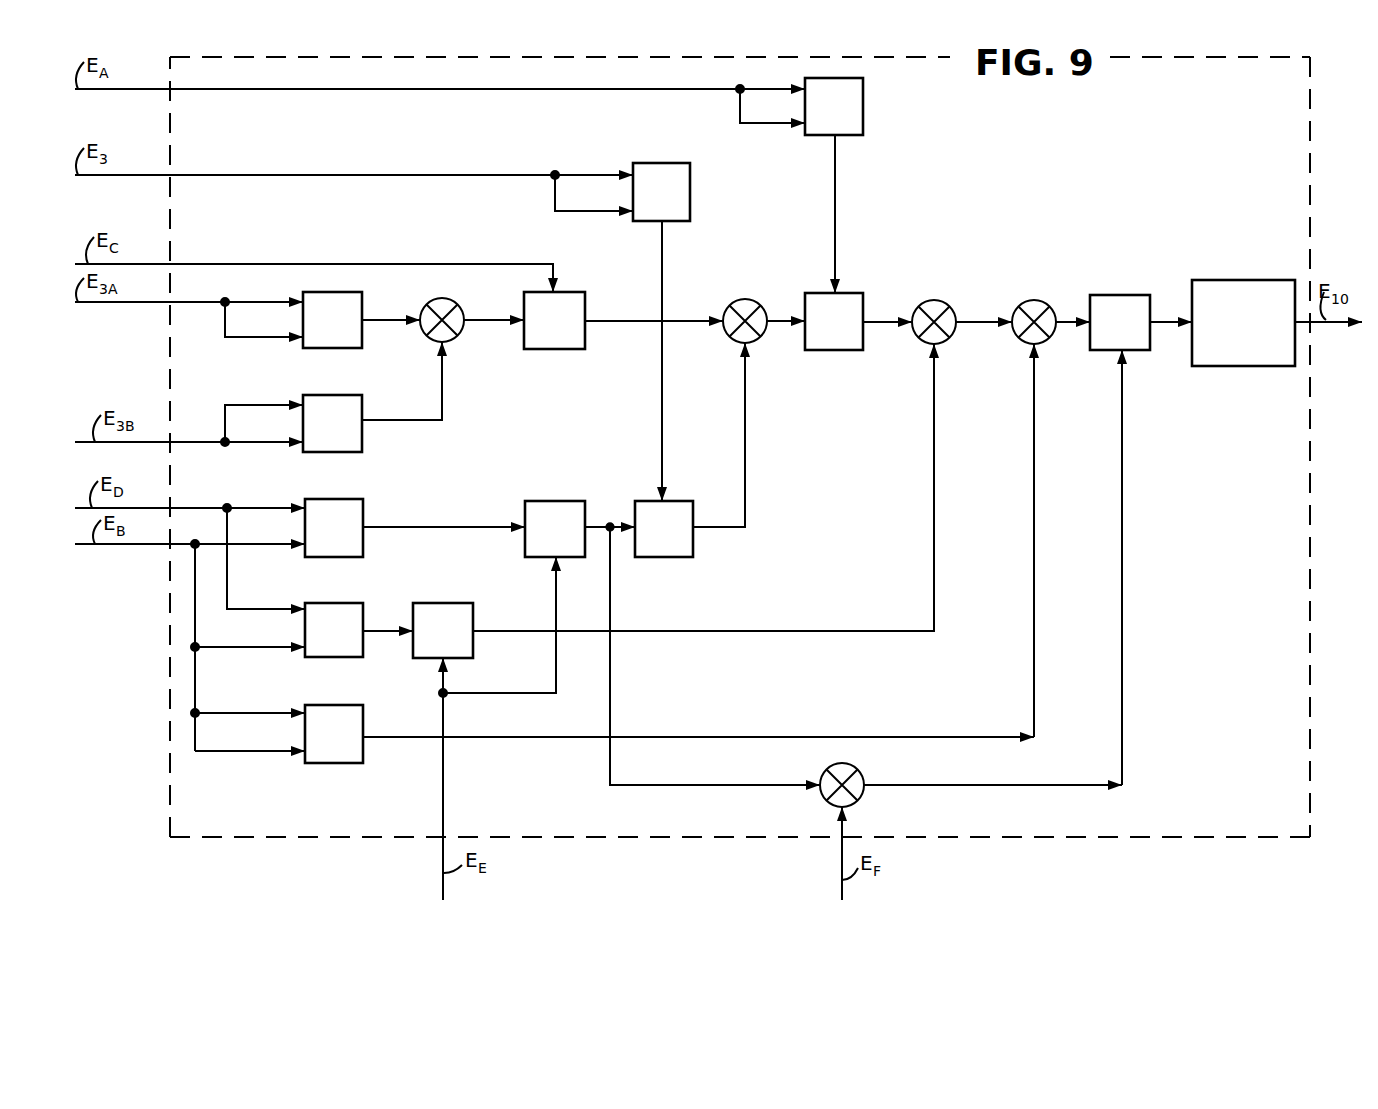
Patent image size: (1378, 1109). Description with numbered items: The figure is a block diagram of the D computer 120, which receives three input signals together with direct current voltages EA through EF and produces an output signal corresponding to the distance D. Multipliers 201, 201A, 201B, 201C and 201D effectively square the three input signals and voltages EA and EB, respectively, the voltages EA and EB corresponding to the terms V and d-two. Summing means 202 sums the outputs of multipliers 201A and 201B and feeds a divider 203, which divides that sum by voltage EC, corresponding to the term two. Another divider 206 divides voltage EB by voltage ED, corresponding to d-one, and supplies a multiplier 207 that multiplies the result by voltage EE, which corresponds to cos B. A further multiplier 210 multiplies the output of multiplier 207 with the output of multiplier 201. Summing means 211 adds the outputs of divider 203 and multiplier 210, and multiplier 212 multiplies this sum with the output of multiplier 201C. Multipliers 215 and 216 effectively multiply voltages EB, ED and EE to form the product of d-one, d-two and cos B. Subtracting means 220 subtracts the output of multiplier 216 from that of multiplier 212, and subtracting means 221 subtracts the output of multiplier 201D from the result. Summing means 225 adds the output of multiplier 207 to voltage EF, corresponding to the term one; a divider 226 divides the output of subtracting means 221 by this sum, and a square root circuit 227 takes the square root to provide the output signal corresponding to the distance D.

The D computer 120 is at (740, 447).
The multiplier 201 is at (690, 200).
The multiplier 201A is at (318, 348).
The multiplier 201B is at (330, 452).
The multiplier 201C is at (863, 106).
The multiplier 201D is at (320, 705).
The summing means 202 is at (458, 305).
The divider 203 is at (548, 349).
The divider 206 is at (363, 510).
The multiplier 207 is at (535, 501).
The multiplier 210 is at (680, 501).
The summing means 211 is at (759, 305).
The multiplier 212 is at (822, 350).
The multiplier 215 is at (325, 603).
The multiplier 216 is at (430, 603).
The subtracting means 220 is at (946, 303).
The subtracting means 221 is at (1046, 303).
The summing means 225 is at (857, 768).
The divider 226 is at (1120, 295).
The square root circuit 227 is at (1240, 280).